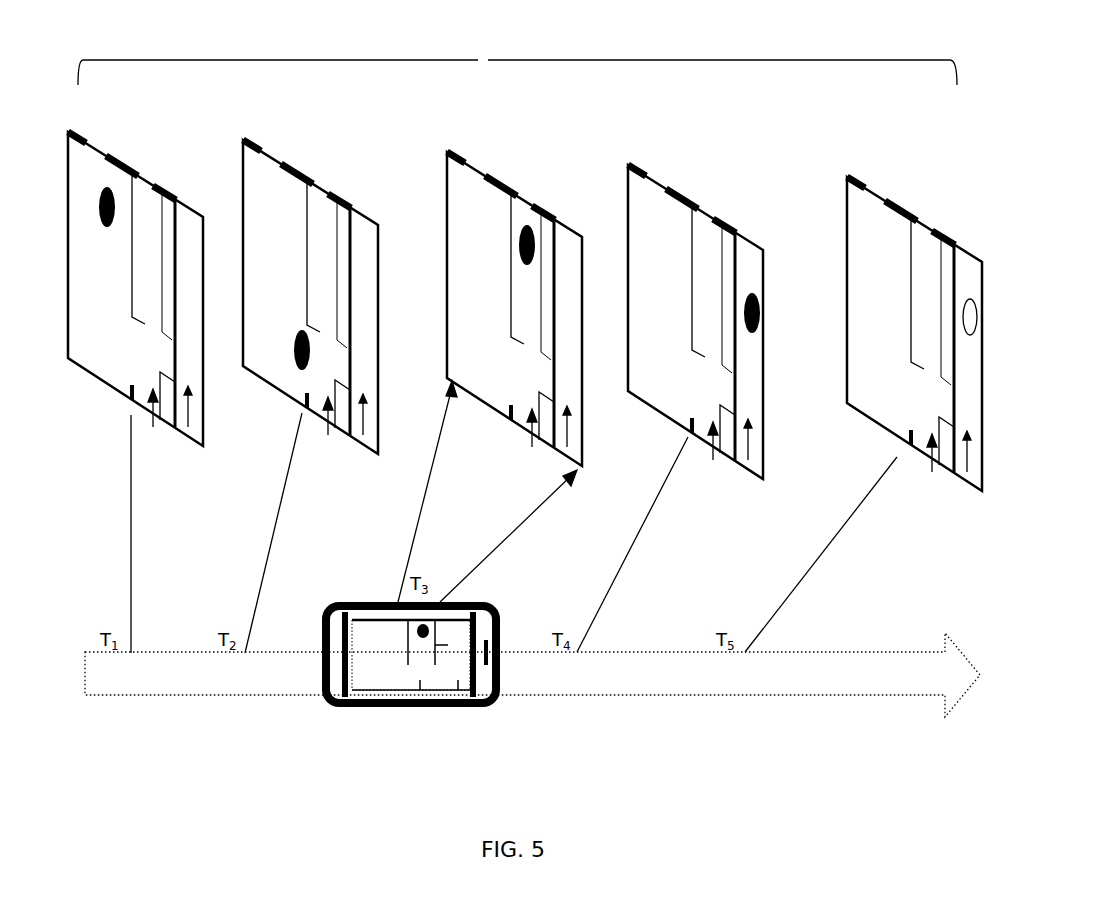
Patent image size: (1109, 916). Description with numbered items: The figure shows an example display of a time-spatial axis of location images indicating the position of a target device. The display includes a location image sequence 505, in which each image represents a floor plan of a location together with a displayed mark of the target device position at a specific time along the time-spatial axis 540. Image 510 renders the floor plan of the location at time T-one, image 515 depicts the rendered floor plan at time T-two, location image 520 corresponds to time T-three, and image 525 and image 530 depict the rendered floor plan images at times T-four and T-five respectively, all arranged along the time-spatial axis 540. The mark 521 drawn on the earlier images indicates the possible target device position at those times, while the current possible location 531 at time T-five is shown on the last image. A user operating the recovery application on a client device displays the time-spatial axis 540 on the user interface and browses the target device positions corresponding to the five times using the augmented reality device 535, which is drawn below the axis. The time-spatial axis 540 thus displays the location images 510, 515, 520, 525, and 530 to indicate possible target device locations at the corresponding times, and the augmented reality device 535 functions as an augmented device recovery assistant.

The location image sequence 505 is at (488, 60).
The image 510 is at (128, 162).
The image 515 is at (294, 168).
The location image 520 is at (497, 180).
The image 525 is at (678, 195).
The image 530 is at (897, 204).
The position marker of tracked object 521 is at (745, 313).
The current possible location 531 is at (965, 317).
The augmented reality device 535 is at (358, 602).
The time-spatial axis 540 is at (627, 652).